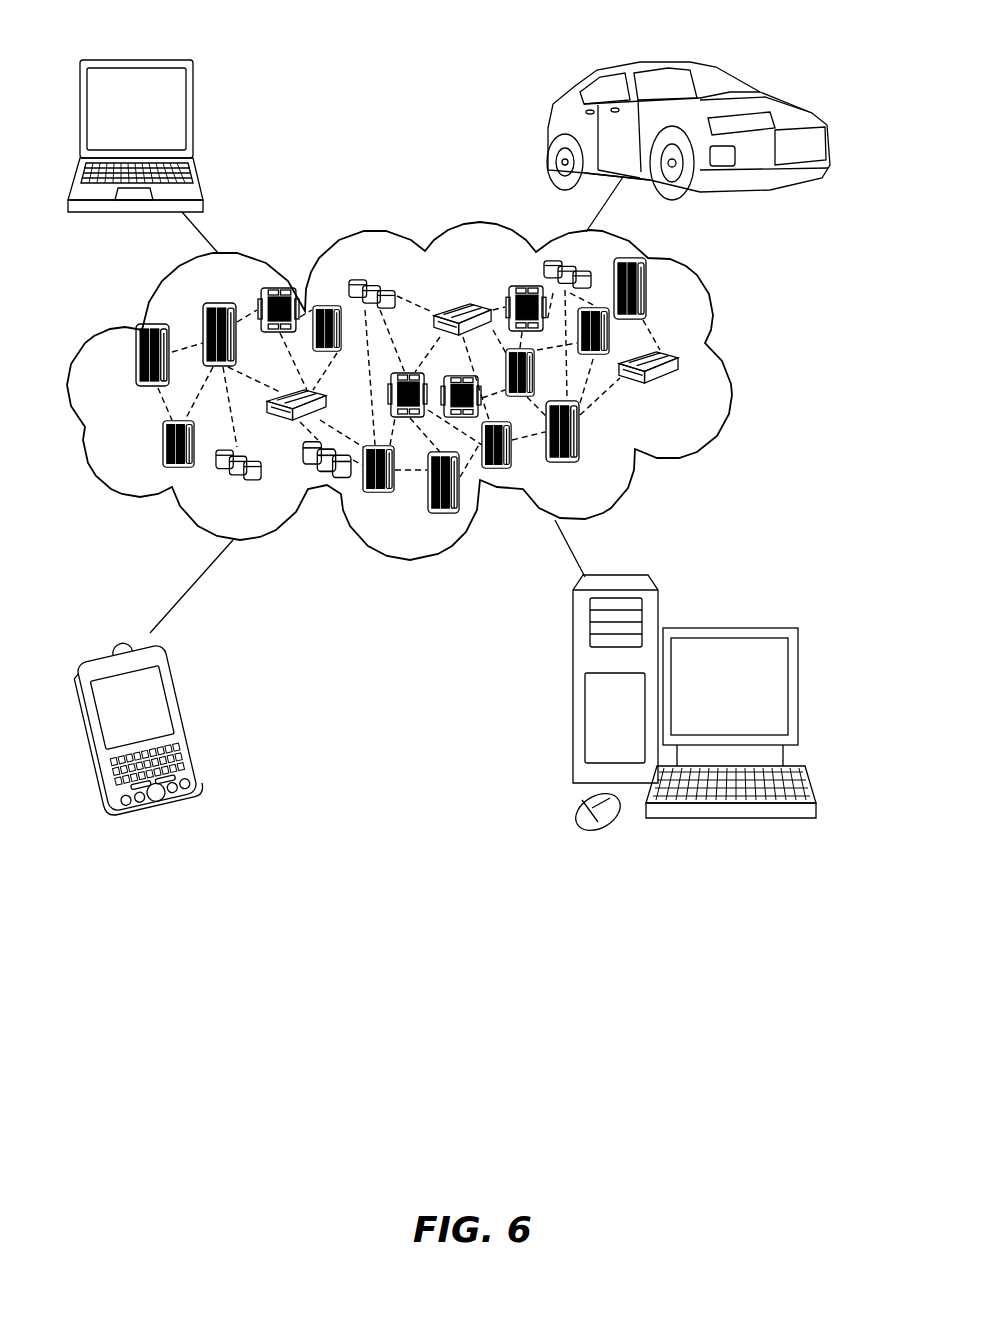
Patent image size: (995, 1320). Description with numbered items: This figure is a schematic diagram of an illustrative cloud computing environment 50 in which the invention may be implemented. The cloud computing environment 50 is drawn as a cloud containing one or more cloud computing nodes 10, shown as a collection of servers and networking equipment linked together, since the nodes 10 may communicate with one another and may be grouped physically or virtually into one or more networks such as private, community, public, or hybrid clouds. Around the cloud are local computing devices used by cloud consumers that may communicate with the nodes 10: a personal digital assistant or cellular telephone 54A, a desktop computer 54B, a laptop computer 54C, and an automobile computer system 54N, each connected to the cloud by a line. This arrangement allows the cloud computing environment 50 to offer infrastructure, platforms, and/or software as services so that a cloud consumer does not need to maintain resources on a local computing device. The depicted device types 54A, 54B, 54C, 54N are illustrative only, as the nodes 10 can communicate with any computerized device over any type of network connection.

The cloud computing node 10 is at (686, 401).
The cloud computing environment 50 is at (729, 367).
The personal digital assistant or cellular telephone 54A is at (186, 716).
The desktop computer 54B is at (728, 627).
The laptop computer 54C is at (194, 118).
The automobile computer system 54N is at (553, 130).